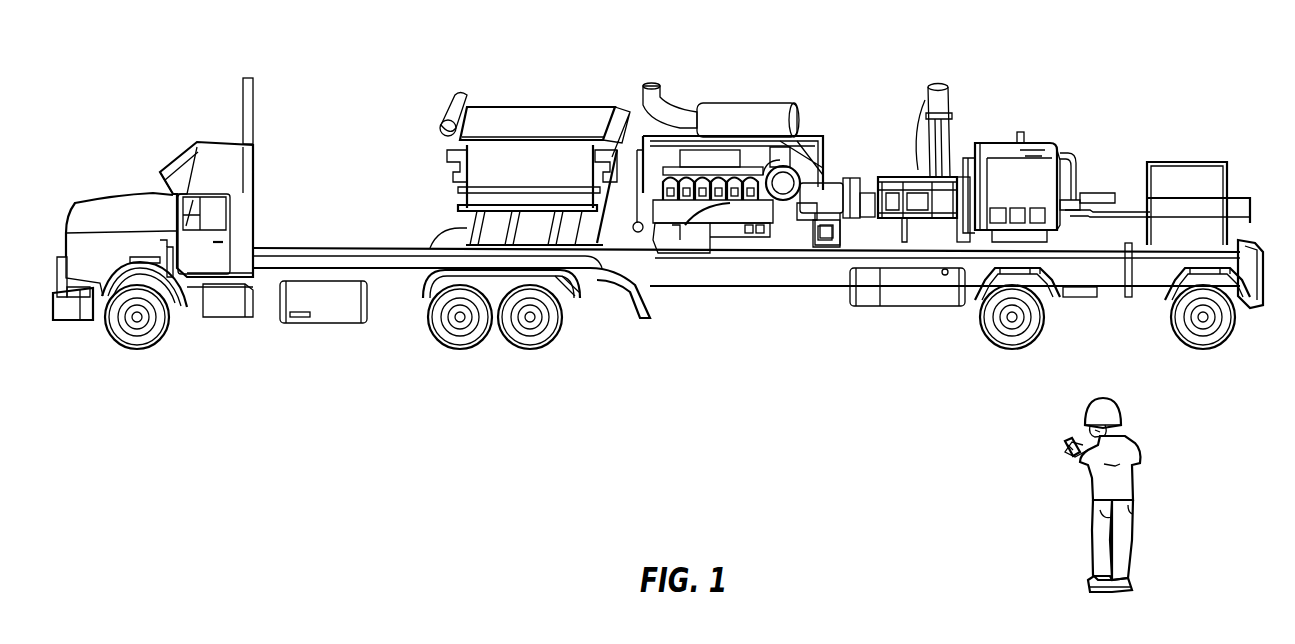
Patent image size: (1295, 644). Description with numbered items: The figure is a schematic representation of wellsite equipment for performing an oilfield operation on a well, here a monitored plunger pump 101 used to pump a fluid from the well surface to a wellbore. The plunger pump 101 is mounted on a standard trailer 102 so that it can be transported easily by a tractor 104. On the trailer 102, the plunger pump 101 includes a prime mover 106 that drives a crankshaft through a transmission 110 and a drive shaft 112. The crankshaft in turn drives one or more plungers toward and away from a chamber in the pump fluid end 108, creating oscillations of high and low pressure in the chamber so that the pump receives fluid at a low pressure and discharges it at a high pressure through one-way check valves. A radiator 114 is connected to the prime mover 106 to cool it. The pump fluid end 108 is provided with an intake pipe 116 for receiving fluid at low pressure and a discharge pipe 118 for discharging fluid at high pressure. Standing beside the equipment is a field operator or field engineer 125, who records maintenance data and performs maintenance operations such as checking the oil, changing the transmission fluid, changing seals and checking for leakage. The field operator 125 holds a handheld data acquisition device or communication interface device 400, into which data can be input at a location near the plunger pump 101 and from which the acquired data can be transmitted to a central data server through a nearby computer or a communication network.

The plunger pump 101 is at (1093, 70).
The trailer 102 is at (753, 288).
The tractor 104 is at (228, 142).
The prime mover 106 is at (712, 157).
The pump fluid end 108 is at (1003, 140).
The transmission 110 is at (837, 180).
The drive shaft 112 is at (915, 170).
The radiator 114 is at (543, 107).
The intake pipe 116 is at (1190, 218).
The discharge pipe 118 is at (1110, 193).
The field operator 125 is at (1137, 443).
The handheld data acquisition device 400 is at (1068, 438).